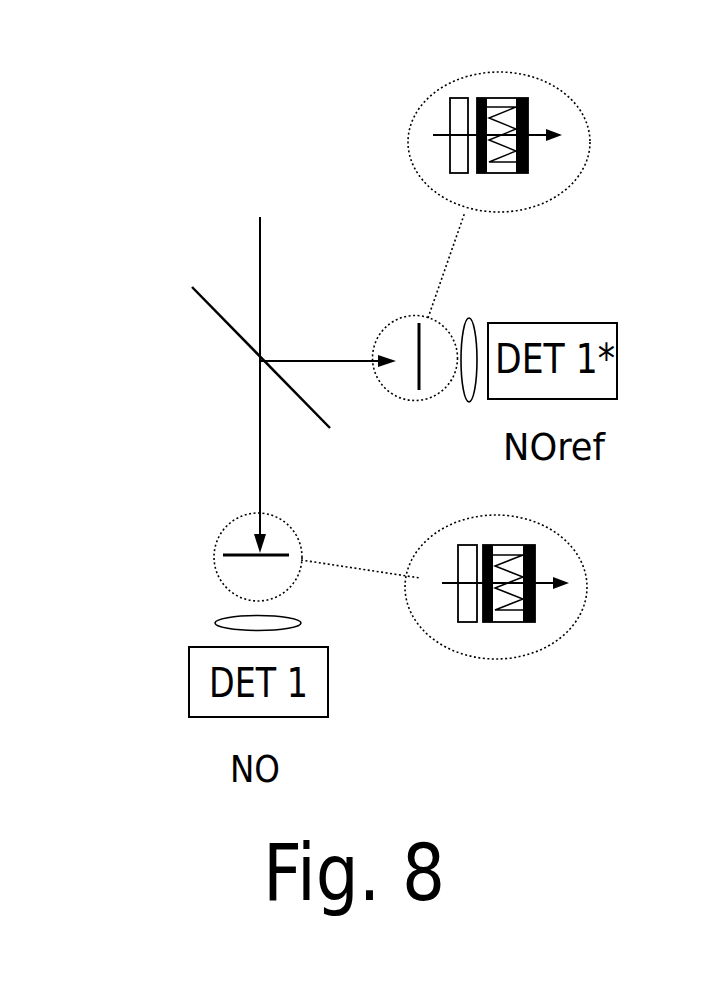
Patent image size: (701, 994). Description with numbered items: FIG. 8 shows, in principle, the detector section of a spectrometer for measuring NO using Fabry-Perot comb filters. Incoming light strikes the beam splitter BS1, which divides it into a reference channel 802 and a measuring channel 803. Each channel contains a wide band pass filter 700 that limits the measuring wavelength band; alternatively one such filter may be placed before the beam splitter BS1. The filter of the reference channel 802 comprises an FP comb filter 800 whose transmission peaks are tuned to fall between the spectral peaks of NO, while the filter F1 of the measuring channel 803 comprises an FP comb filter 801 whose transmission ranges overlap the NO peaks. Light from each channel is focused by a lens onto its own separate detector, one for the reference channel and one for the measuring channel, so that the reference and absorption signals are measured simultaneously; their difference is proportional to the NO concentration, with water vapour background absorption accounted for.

The wide band pass filter 700 is at (458, 125).
The FP comb filter 800 is at (491, 340).
The FP comb filter 801 is at (533, 607).
The reference channel 802 is at (340, 360).
The measuring channel 803 is at (253, 438).
The beam splitter BS1 is at (221, 347).
The filter of the measuring channel F1 is at (232, 557).